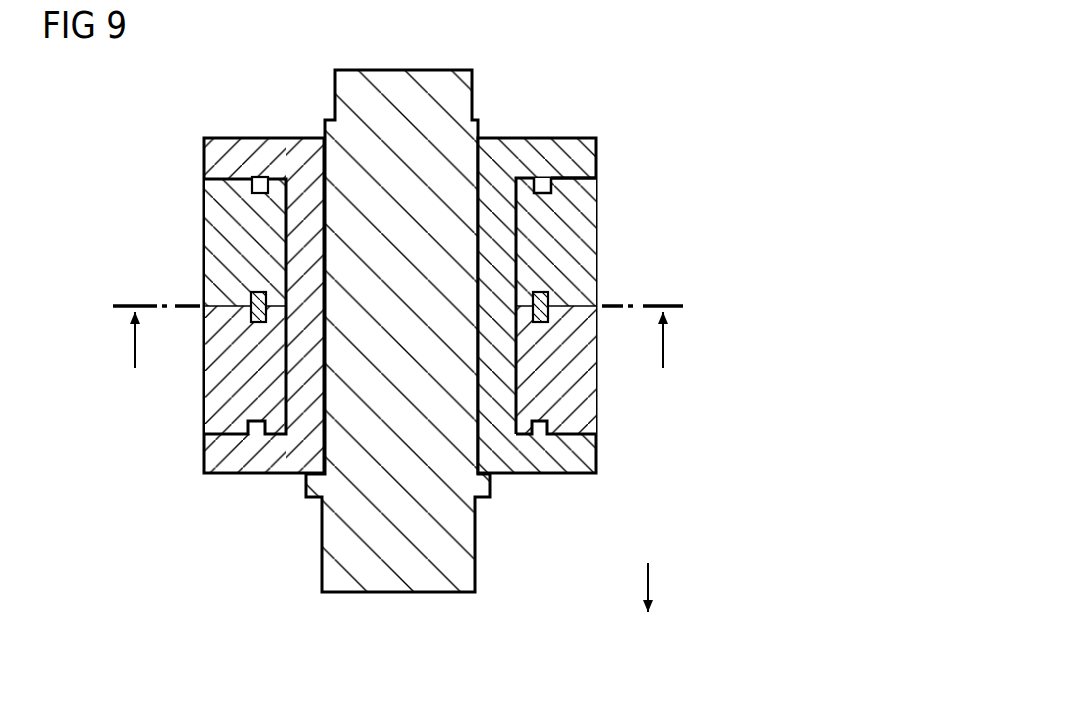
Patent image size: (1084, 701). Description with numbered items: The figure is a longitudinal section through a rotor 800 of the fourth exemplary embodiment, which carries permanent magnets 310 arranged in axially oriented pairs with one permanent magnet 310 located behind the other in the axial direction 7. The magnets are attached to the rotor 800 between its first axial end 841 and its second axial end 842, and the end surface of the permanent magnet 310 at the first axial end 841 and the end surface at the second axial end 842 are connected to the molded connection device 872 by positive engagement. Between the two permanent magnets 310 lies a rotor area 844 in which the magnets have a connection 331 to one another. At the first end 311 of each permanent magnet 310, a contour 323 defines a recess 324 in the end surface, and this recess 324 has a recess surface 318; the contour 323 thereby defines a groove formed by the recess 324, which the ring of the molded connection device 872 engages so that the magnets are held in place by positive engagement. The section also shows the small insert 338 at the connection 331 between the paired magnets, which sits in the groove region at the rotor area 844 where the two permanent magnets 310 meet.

The rotor 800 is at (319, 81).
The first end of the permanent magnet 311 is at (176, 181).
The molded connection device 872 is at (241, 494).
The permanent magnet 310 is at (213, 222).
The recess surface 318 is at (257, 176).
The insert 338 is at (251, 298).
The recess 324 is at (541, 177).
The contour 323 is at (571, 168).
The connection 331 is at (98, 301).
The rotor area 844 is at (705, 307).
The first axial end 841 is at (709, 135).
The second axial end 842 is at (704, 466).
The axial direction 7 is at (650, 580).